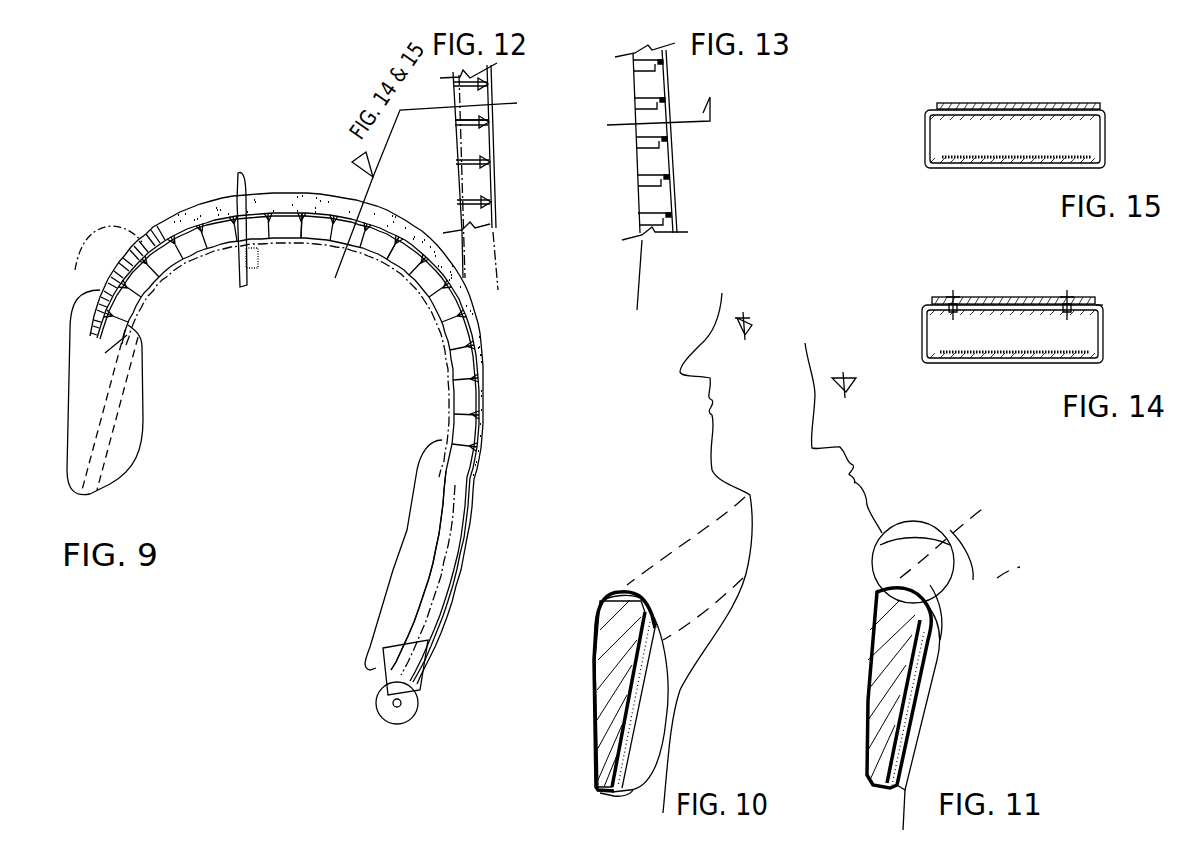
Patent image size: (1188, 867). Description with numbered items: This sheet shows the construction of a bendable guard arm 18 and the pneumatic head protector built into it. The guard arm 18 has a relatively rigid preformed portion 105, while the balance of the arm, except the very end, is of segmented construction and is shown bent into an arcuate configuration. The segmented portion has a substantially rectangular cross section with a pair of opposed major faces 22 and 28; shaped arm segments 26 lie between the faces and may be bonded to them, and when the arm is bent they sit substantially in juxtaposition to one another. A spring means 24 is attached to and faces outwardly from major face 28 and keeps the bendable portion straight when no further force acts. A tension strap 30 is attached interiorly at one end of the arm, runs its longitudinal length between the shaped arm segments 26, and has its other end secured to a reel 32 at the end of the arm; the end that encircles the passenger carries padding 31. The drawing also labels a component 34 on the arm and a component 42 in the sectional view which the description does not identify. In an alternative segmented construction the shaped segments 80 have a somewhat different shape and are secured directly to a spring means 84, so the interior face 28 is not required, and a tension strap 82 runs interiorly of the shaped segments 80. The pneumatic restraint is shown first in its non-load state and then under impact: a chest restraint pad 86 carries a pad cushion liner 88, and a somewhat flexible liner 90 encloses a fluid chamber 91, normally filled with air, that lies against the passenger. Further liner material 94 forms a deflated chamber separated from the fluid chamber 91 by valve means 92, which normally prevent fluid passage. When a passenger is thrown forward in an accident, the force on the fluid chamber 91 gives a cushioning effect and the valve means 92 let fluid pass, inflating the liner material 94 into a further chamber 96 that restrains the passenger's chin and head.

In FIG. 9, the guard arm 18 is at (302, 175).
In FIG. 10, the guard arm 18 is at (680, 513).
In FIG. 9, the major face 22 is at (292, 262).
In FIG. 12, the major face 22 is at (454, 170).
In FIG. 14, the major face 22 is at (1094, 367).
In FIG. 9, the spring means 24 is at (285, 212).
In FIG. 12, the spring means 24 is at (505, 147).
In FIG. 14, the spring means 24 is at (990, 297).
In FIG. 12, the shaped arm segments 26 is at (490, 119).
In FIG. 12, the major face 28 is at (493, 166).
In FIG. 14, the major face 28 is at (1110, 304).
In FIG. 9, the tension strap 30 is at (389, 301).
In FIG. 12, the tension strap 30 is at (479, 244).
In FIG. 9, the padding 31 is at (174, 291).
In FIG. 9, the reel 32 is at (430, 686).
In FIG. 9, the slide arm 34 is at (458, 534).
In FIG. 14, the cushion insert 42 is at (1073, 353).
In FIG. 13, the shaped segments 80 is at (668, 157).
In FIG. 15, the shaped segments 80 is at (1038, 144).
In FIG. 15, the tension strap 82 is at (1068, 156).
In FIG. 13, the spring means 84 is at (687, 200).
In FIG. 15, the spring means 84 is at (1054, 96).
In FIG. 10, the chest restraint pad 86 is at (606, 698).
In FIG. 10, the pad cushion liner 88 is at (617, 722).
In FIG. 10, the flexible liner 90 is at (622, 796).
In FIG. 11, the flexible liner 90 is at (916, 724).
In FIG. 10, the fluid chamber 91 is at (654, 731).
In FIG. 11, the fluid chamber 91 is at (920, 698).
In FIG. 10, the valve means 92 is at (672, 630).
In FIG. 10, the liner material 94 is at (620, 588).
In FIG. 11, the liner material 94 is at (872, 563).
In FIG. 11, the further chamber 96 is at (940, 590).
In FIG. 9, the rigid preformed portion 105 is at (400, 562).